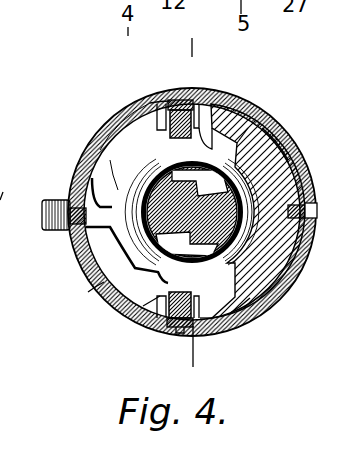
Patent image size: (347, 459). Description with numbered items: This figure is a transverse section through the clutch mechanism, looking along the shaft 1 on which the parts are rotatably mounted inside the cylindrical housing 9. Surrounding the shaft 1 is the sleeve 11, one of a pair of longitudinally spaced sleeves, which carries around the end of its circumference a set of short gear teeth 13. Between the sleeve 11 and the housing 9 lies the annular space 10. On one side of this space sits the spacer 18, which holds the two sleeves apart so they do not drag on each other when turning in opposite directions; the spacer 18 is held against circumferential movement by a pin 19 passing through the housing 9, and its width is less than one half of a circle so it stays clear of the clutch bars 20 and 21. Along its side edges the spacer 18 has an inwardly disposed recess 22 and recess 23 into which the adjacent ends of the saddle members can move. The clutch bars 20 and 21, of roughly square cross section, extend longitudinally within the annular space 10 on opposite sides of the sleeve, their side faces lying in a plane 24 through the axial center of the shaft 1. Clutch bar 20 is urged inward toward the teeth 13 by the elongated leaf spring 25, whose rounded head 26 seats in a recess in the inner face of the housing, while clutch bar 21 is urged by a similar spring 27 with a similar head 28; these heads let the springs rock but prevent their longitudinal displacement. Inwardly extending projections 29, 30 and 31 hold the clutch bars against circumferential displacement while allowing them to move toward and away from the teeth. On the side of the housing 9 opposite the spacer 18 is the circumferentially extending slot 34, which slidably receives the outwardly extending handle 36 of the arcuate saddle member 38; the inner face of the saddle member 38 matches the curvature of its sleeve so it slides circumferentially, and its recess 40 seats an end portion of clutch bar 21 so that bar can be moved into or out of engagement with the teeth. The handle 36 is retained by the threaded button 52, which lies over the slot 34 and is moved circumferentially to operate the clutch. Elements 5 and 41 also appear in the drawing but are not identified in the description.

The shaft 1 is at (222, 224).
The casing part 5 is at (321, 232).
The housing 9 is at (262, 128).
The annular space 10 is at (121, 117).
The sleeve 11 is at (133, 231).
The gear teeth 13 is at (3, 192).
The spacer 18 is at (274, 150).
The pin 19 is at (307, 203).
The clutch bar 20 is at (156, 101).
The clutch bar 21 is at (166, 311).
The recess 22 is at (208, 103).
The recess 23 is at (262, 300).
The plane 24 is at (199, 357).
The leaf spring 25 is at (158, 103).
The head 26 is at (187, 101).
The spring 27 is at (224, 332).
The head 28 is at (176, 324).
The projection 29 is at (204, 100).
The projection 30 is at (142, 122).
The projection 31 is at (112, 332).
The slot 34 is at (90, 292).
The handle 36 is at (90, 180).
The saddle member 38 is at (137, 168).
The recess 40 is at (130, 273).
The projection 41 is at (240, 138).
The retaining button 52 is at (50, 199).